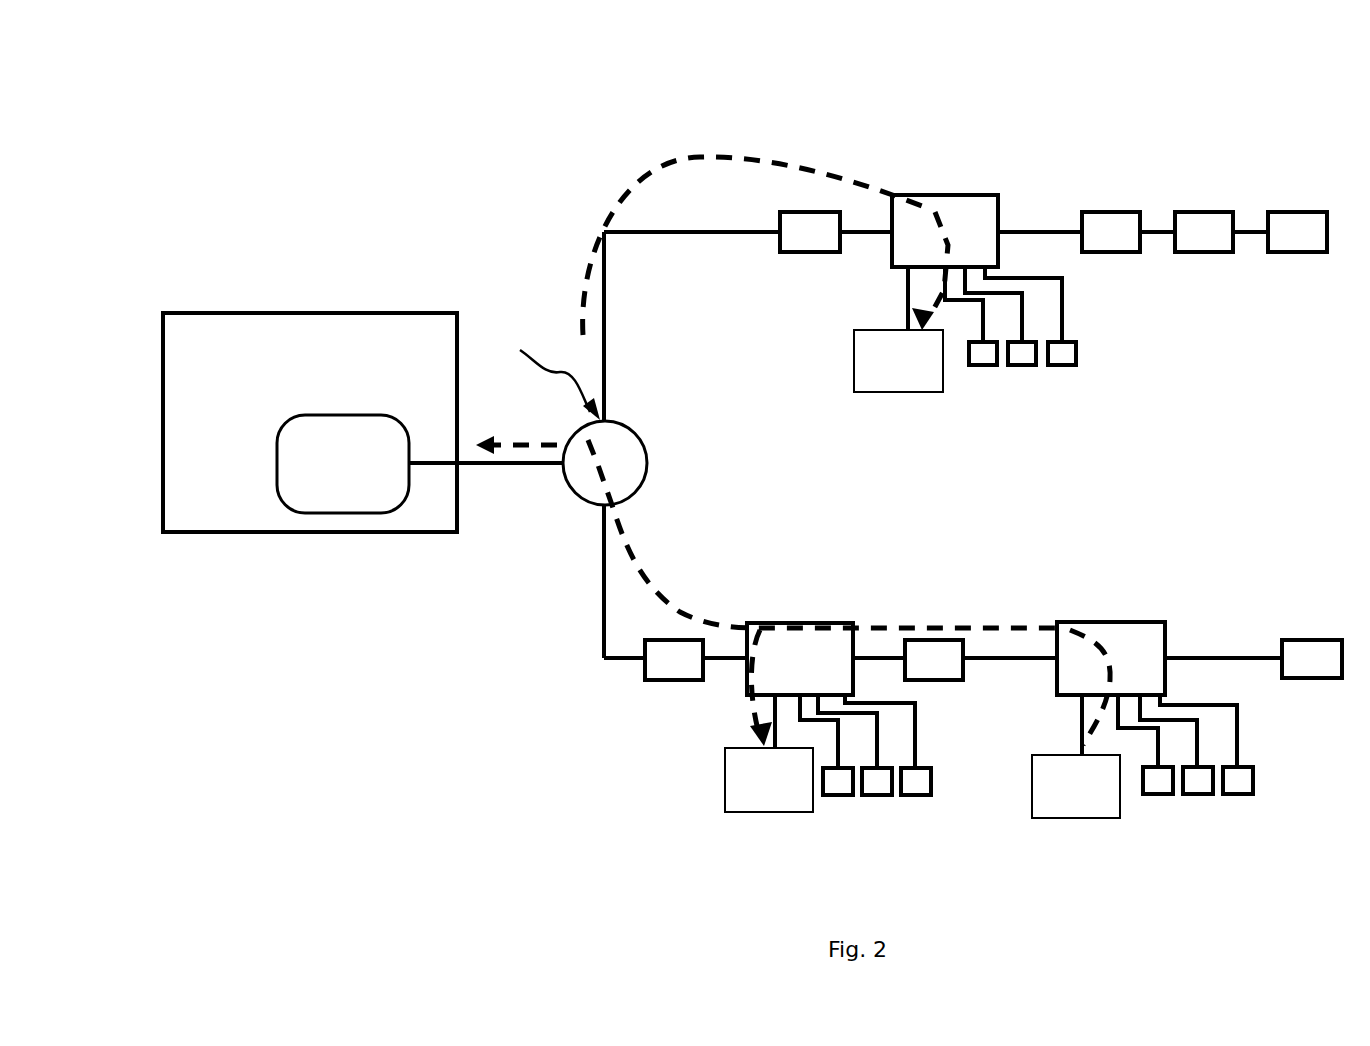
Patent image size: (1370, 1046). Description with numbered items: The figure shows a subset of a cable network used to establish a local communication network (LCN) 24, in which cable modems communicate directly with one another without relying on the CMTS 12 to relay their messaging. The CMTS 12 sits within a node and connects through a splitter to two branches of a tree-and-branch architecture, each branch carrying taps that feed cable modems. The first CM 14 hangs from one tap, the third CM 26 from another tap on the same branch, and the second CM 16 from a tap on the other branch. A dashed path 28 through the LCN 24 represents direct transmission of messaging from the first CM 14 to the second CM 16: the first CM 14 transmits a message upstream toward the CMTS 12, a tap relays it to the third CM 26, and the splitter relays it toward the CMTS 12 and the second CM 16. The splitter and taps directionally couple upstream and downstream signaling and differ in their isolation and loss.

The CMTS 12 is at (350, 413).
The first CM 14 is at (1086, 818).
The second CM 16 is at (905, 392).
The local communication network (LCN) 24 is at (752, 451).
The third CM 26 is at (775, 812).
The path 28 is at (695, 157).